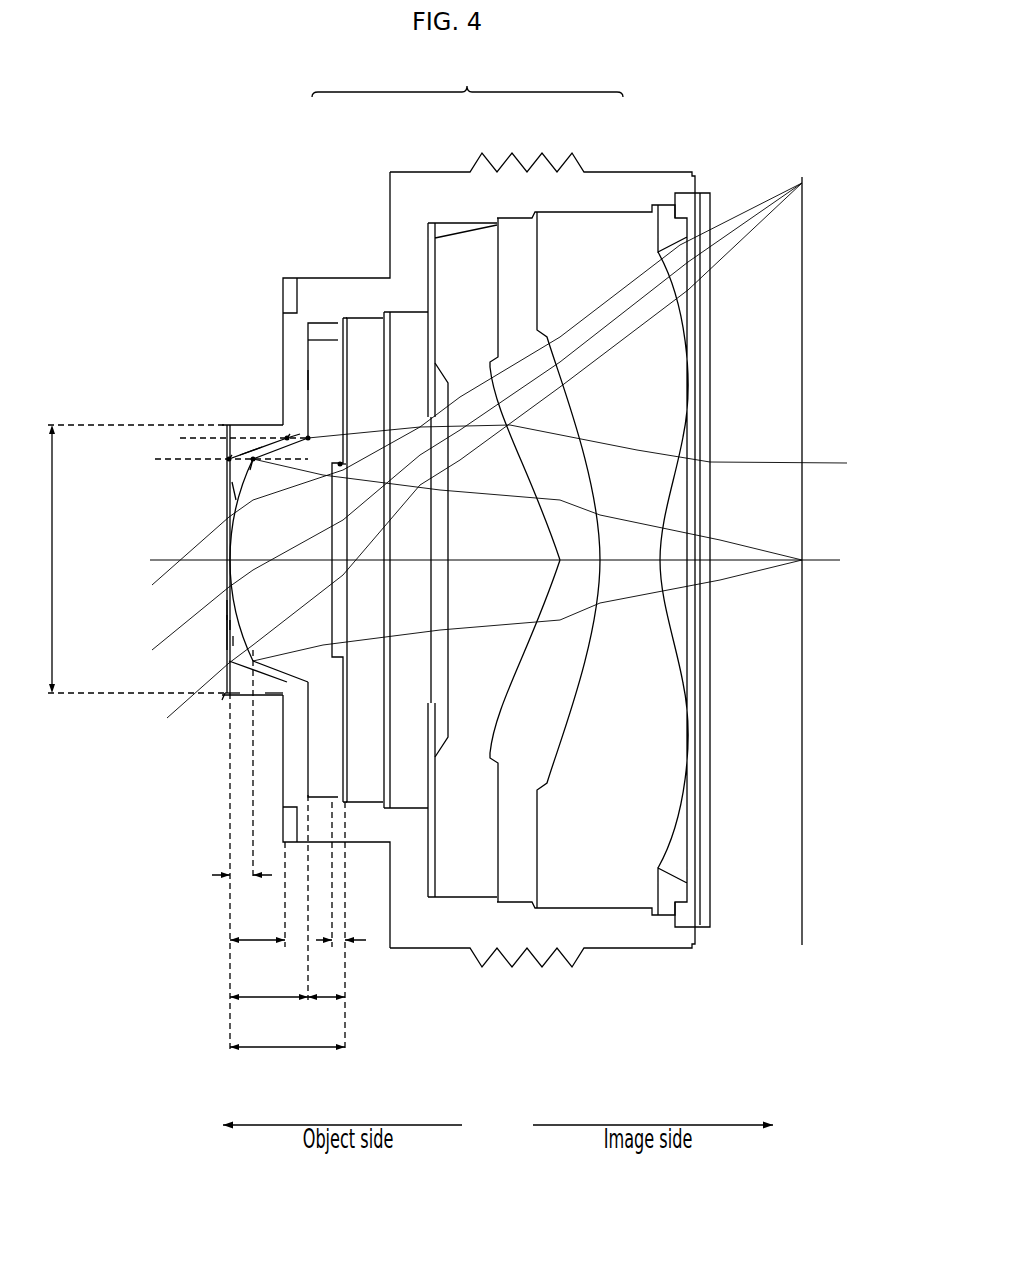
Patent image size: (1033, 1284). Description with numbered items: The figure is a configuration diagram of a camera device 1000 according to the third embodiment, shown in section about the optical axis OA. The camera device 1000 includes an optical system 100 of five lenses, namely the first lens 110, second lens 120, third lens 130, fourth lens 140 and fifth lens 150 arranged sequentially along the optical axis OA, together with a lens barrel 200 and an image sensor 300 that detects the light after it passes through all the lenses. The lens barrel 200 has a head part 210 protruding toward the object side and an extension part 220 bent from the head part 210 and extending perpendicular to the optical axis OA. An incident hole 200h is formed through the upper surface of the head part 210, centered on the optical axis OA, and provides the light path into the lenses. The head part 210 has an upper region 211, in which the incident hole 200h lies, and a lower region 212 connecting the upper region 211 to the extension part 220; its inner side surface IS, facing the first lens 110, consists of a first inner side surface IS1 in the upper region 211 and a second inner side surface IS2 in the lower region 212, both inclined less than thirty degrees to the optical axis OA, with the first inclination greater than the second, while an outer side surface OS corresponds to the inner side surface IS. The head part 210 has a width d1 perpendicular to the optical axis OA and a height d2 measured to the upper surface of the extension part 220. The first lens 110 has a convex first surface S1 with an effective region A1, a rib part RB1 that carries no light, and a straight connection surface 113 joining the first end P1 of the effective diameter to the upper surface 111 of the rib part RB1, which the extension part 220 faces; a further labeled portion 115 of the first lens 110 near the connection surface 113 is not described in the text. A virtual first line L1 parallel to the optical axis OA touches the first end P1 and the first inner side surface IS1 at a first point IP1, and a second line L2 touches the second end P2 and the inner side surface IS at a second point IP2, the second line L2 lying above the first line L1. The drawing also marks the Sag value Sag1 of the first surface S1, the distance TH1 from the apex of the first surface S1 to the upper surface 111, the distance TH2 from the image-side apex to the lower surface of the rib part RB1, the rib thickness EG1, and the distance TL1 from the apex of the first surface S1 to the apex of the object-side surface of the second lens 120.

The camera device 1000 is at (103, 150).
The optical system 100 is at (467, 77).
The first lens 110 is at (285, 395).
The object-side surface of the rib part 111 is at (267, 368).
The connection surface 113 is at (216, 419).
The inclined portion of first lens 115 is at (263, 408).
The second lens 120 is at (359, 449).
The third lens 130 is at (405, 452).
The fourth lens 140 is at (527, 502).
The fifth lens 150 is at (642, 506).
The lens barrel 200 is at (509, 544).
The incident hole 200h is at (138, 559).
The head part 210 is at (194, 560).
The upper region 211 is at (188, 731).
The lower region 212 is at (209, 743).
The extension part 220 is at (283, 560).
The image sensor 300 is at (830, 561).
The rib part RB1 is at (280, 333).
The first end P1 is at (267, 500).
The second end P2 is at (331, 423).
The first point IP1 is at (191, 478).
The second point IP2 is at (303, 480).
The first line L1 is at (221, 460).
The second line L2 is at (234, 442).
The first surface S1 is at (213, 492).
The optical axis OA is at (480, 562).
The effective region A1 is at (192, 606).
The inner side surface IS is at (149, 625).
The first inner side surface IS1 is at (170, 637).
The second inner side surface IS2 is at (169, 614).
The outer side surface OS is at (156, 710).
The width of the head part d1 is at (42, 559).
The height of the head part d2 is at (257, 954).
The Sag value of the first surface Sag1 is at (242, 890).
The distance from first surface apex to rib upper surface TH1 is at (269, 1011).
The distance from image-side surface apex to rib lower surface TH2 is at (341, 955).
The thickness of the rib part EG1 is at (326, 1011).
The distance from first lens apex to second lens apex TL1 is at (287, 1061).